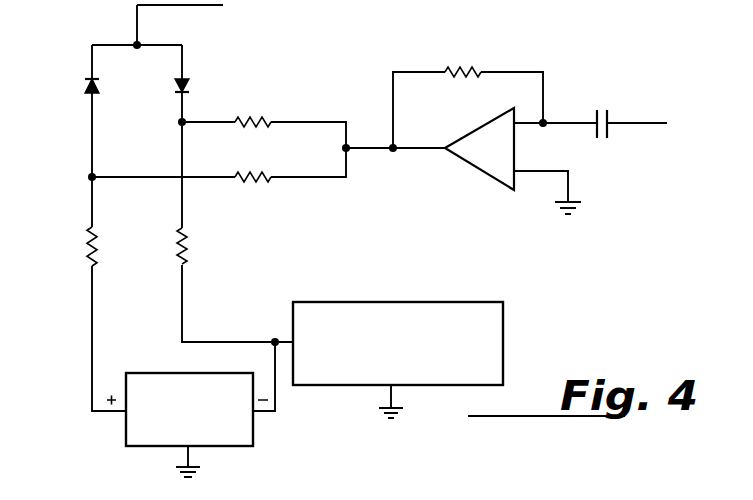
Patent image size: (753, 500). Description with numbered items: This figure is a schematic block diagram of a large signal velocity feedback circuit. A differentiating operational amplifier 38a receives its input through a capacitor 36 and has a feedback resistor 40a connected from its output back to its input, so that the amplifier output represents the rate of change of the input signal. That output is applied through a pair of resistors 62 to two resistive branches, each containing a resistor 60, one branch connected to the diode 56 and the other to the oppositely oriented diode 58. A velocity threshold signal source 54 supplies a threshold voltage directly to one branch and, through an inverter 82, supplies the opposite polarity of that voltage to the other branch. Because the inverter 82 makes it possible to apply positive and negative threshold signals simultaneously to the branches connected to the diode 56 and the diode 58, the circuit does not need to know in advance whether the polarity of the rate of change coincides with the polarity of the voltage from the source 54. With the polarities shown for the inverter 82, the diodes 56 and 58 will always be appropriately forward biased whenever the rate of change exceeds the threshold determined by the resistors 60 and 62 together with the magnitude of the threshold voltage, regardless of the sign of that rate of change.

The diode 56 is at (88, 77).
The diode 58 is at (186, 83).
The resistor 62 is at (267, 118).
The resistor 60 is at (97, 242).
The feedback resistor 40a is at (478, 67).
The differentiating operational amplifier 38a is at (474, 160).
The capacitor 36 is at (612, 119).
The velocity threshold signal source 54 is at (492, 346).
The inverter 82 is at (149, 431).